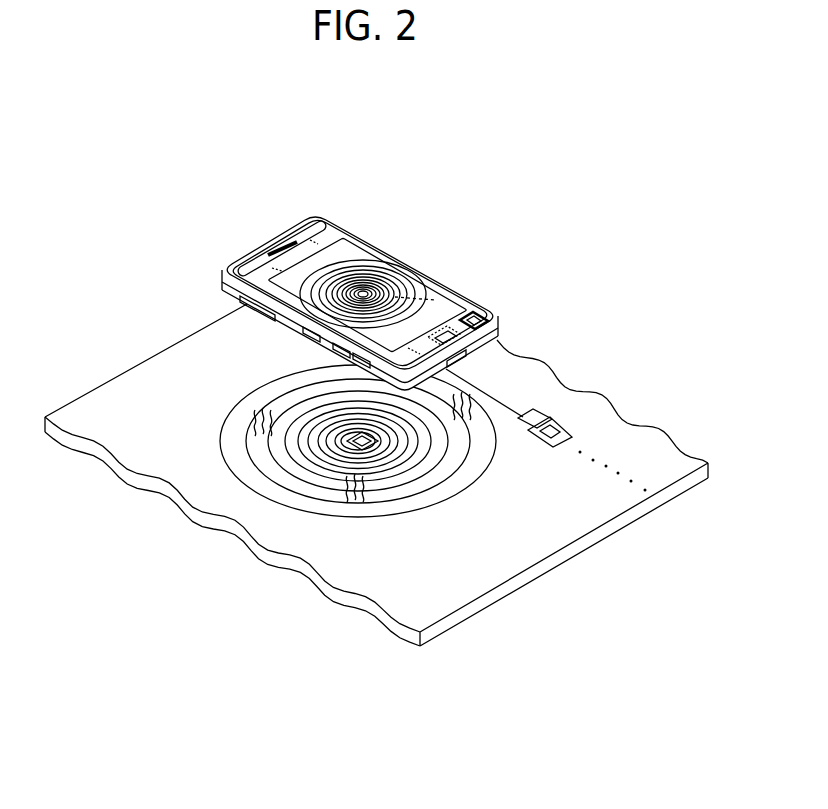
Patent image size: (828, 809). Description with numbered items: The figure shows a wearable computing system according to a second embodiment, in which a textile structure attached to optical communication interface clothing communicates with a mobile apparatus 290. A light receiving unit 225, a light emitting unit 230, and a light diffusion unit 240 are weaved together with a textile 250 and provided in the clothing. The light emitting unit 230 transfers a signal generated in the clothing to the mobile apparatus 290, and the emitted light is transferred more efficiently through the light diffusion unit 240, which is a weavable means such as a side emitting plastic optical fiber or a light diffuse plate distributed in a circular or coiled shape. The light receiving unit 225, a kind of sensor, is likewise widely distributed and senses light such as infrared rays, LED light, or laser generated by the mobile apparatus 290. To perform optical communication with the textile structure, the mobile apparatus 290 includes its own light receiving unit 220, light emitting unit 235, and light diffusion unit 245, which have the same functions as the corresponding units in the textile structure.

The light receiving unit 220 is at (431, 333).
The light receiving unit 225 is at (358, 446).
The light emitting unit 230 is at (552, 420).
The light emitting unit 235 is at (486, 313).
The light diffusion unit 240 is at (455, 496).
The light diffusion unit 245 is at (345, 250).
The textile 250 is at (140, 383).
The mobile apparatus 290 is at (247, 263).